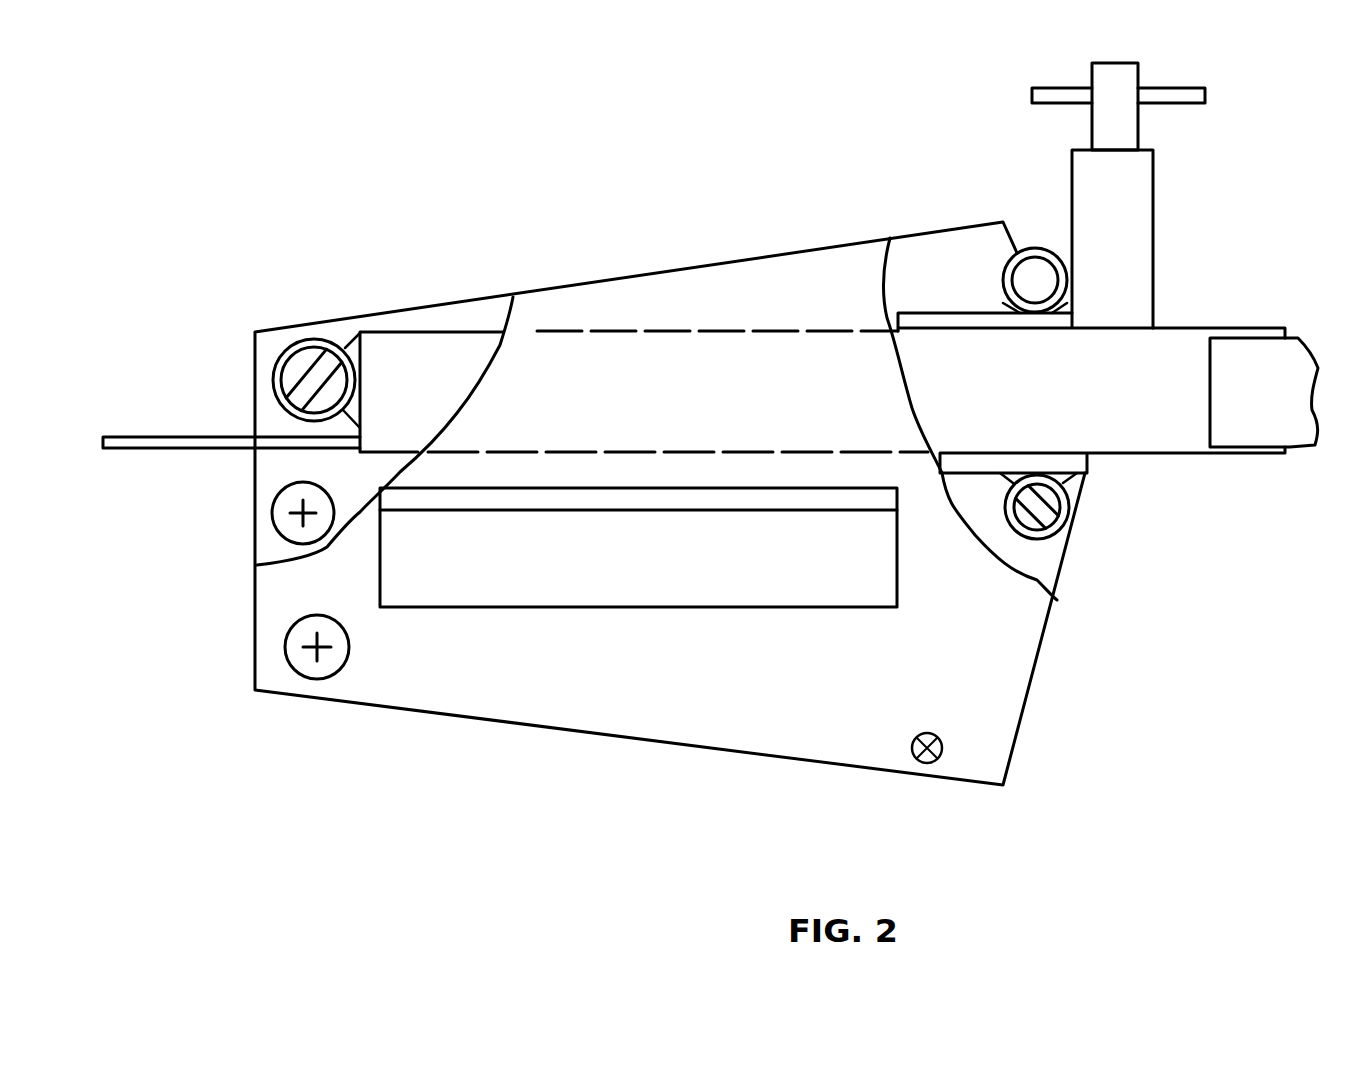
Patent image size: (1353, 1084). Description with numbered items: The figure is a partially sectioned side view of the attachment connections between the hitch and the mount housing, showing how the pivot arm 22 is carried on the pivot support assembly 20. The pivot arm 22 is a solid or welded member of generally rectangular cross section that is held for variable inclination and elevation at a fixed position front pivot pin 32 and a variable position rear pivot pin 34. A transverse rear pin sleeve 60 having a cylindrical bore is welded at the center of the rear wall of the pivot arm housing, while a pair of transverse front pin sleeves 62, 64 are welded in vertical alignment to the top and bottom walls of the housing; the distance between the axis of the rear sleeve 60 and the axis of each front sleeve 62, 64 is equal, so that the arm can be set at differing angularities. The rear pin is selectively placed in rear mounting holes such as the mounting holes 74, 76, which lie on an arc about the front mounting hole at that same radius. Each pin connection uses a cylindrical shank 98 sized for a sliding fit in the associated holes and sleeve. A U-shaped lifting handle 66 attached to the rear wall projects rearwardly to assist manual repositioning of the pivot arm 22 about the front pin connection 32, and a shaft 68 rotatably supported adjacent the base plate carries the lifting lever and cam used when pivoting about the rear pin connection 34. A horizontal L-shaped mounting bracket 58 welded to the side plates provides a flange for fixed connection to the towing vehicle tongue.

The pivot support assembly 20 is at (712, 265).
The pivot arm 22 is at (457, 330).
The front pivot pin 32 is at (1080, 525).
The rear pivot pin 34 is at (272, 390).
The L-shaped mounting bracket 58 is at (635, 607).
The rear pin sleeve 60 is at (317, 343).
The front pin sleeve 62 is at (1032, 250).
The front pin sleeve 64 is at (1075, 523).
The lifting handle 66 is at (143, 450).
The shaft 68 is at (930, 763).
The rear mounting hole 74 is at (283, 528).
The rear mounting hole 76 is at (287, 647).
The cylindrical shank 98 is at (310, 373).